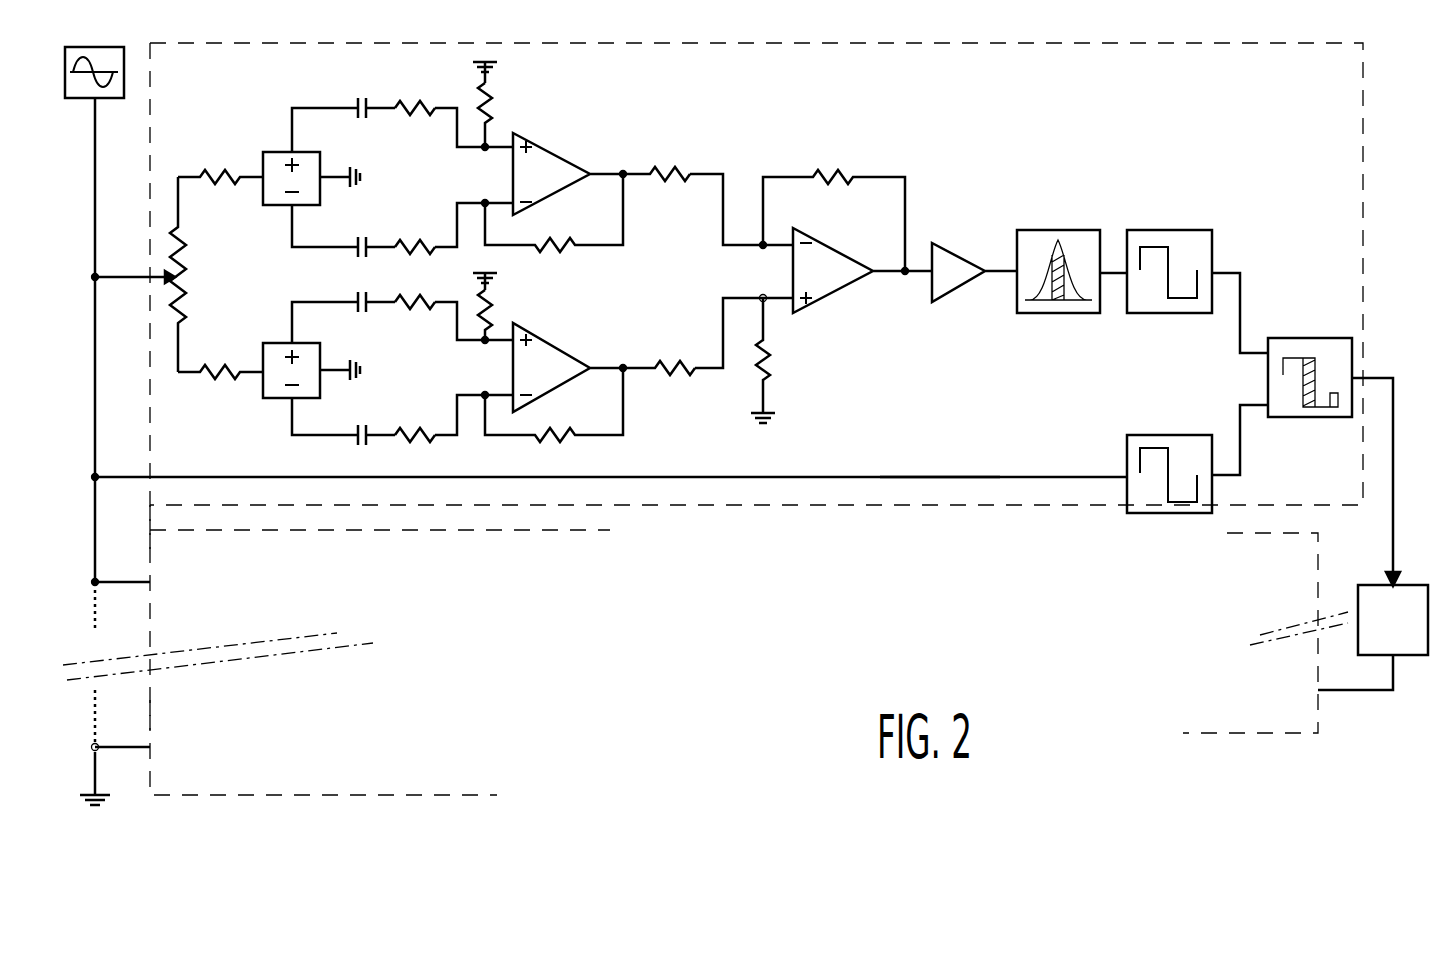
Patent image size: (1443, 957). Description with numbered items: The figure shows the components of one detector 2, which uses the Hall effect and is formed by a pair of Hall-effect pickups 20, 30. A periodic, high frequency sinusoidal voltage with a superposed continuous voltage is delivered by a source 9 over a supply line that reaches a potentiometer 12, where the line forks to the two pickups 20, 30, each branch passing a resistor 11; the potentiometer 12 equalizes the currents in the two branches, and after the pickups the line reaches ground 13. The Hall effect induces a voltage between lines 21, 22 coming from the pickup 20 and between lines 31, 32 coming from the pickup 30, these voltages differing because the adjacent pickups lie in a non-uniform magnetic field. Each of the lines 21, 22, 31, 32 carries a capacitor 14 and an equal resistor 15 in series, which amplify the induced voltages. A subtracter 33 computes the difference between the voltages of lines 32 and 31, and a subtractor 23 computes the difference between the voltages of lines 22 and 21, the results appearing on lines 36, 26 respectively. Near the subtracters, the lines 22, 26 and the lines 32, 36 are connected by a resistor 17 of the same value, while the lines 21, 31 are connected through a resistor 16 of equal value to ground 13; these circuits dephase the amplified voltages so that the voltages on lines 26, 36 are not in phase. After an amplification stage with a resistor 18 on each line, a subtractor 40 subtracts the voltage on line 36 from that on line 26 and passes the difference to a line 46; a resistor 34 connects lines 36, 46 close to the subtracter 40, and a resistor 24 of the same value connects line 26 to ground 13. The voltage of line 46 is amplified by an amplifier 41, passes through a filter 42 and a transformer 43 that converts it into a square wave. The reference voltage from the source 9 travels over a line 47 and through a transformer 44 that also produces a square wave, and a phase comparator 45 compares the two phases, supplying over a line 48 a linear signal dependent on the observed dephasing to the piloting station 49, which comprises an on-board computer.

The detector 2 is at (150, 510).
The source 9 is at (103, 88).
The resistor 11 is at (215, 177).
The potentiometer 12 is at (170, 305).
The ground 13 is at (497, 68).
The capacitor 14 is at (358, 103).
The resistor 15 is at (412, 103).
The resistor 16 is at (497, 112).
The resistor 17 is at (605, 245).
The resistor 18 is at (700, 170).
The Hall-effect pickup 20 is at (270, 380).
The line 21 is at (288, 302).
The line 22 is at (290, 440).
The subtractor 23 is at (548, 380).
The resistor 24 is at (775, 362).
The line 26 is at (640, 368).
The Hall-effect pickup 30 is at (275, 167).
The line 31 is at (292, 108).
The line 32 is at (288, 240).
The subtracter 33 is at (548, 185).
The resistor 34 is at (850, 170).
The line 36 is at (640, 174).
The subtractor 40 is at (820, 285).
The amplifier 41 is at (955, 265).
The filter 42 is at (1085, 240).
The transformer 43 is at (1195, 240).
The transformer 44 is at (1140, 440).
The phase comparator 45 is at (1315, 343).
The line 46 is at (1240, 330).
The line 47 is at (945, 480).
The line 48 is at (1385, 385).
The piloting station 49 is at (1372, 600).